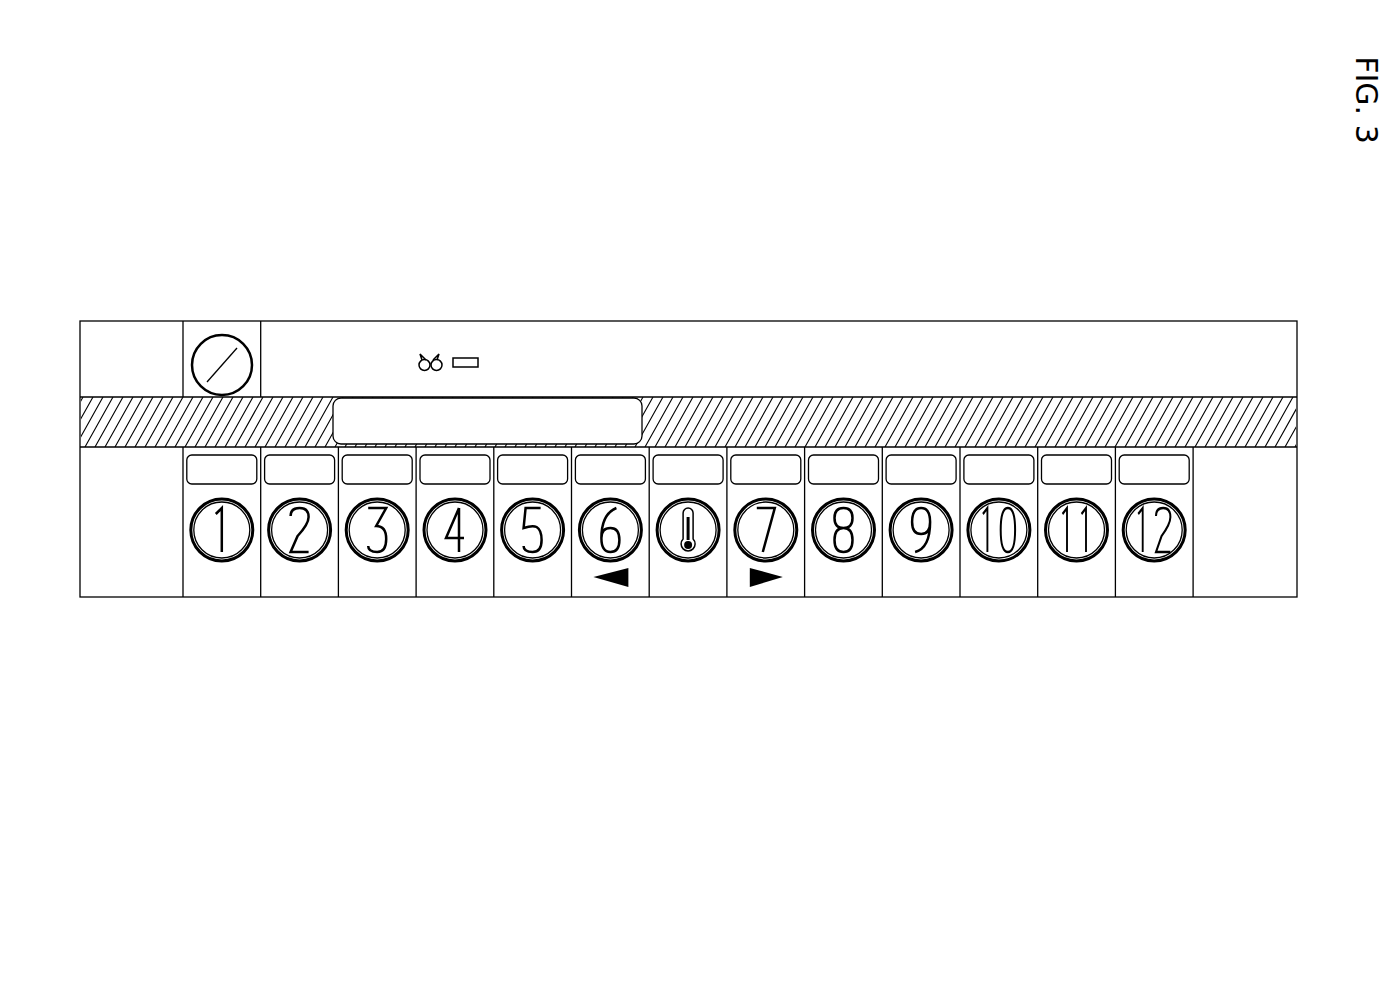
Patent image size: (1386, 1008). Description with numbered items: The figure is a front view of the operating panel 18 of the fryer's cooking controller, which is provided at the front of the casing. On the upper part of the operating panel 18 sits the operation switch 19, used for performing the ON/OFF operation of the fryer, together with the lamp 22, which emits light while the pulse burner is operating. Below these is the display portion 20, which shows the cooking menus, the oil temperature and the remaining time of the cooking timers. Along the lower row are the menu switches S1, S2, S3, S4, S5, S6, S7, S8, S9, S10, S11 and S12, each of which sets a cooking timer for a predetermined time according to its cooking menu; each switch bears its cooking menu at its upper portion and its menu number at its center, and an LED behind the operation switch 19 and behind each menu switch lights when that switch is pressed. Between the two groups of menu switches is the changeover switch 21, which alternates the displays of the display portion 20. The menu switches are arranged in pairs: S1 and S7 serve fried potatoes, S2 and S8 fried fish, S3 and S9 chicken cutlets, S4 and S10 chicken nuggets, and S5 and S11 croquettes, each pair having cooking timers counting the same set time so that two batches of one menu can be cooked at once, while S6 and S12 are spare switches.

The operating panel 18 is at (722, 140).
The operation switch 19 is at (229, 333).
The display portion 20 is at (588, 398).
The changeover switch 21 is at (688, 564).
The lamp 22 is at (474, 340).
The menu switch S1 is at (222, 566).
The menu switch S2 is at (300, 566).
The menu switch S3 is at (377, 565).
The menu switch S4 is at (455, 561).
The menu switch S5 is at (533, 561).
The menu switch S6 is at (610, 566).
The menu switch S7 is at (766, 566).
The menu switch S8 is at (844, 560).
The menu switch S9 is at (921, 560).
The menu switch S10 is at (996, 560).
The menu switch S11 is at (1075, 560).
The menu switch S12 is at (1154, 560).